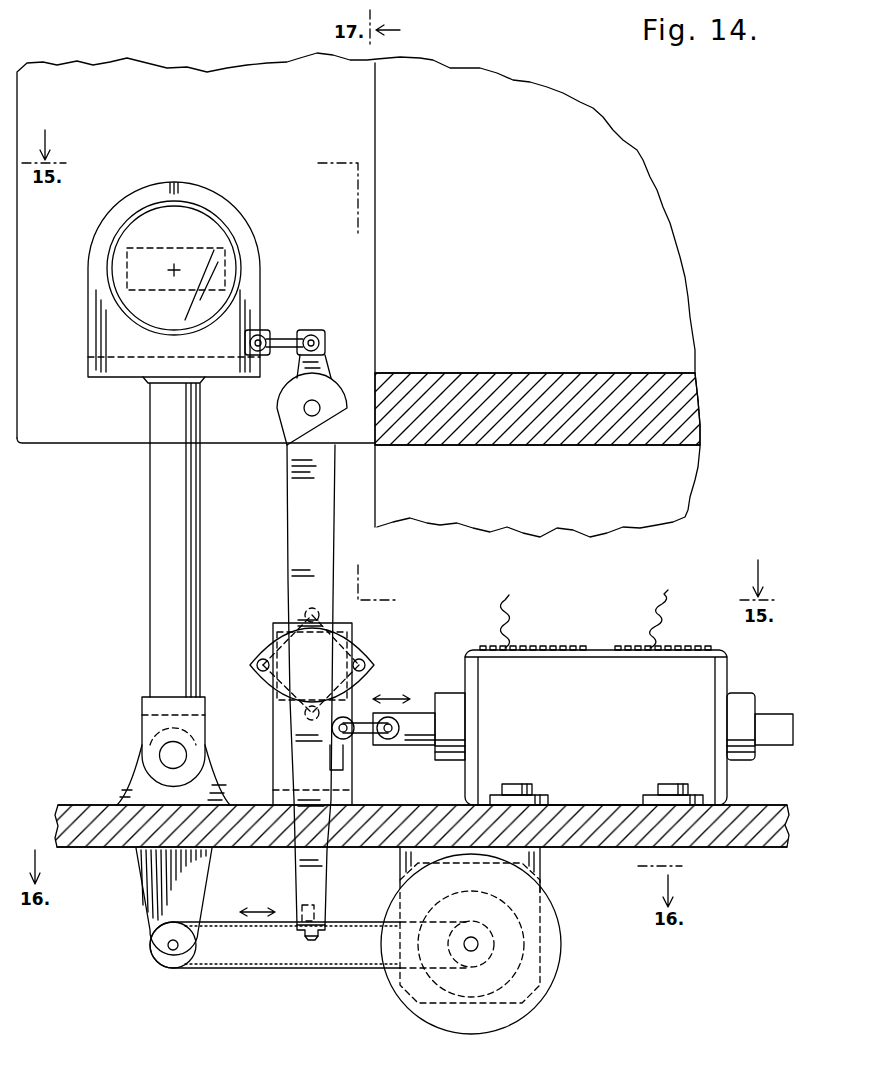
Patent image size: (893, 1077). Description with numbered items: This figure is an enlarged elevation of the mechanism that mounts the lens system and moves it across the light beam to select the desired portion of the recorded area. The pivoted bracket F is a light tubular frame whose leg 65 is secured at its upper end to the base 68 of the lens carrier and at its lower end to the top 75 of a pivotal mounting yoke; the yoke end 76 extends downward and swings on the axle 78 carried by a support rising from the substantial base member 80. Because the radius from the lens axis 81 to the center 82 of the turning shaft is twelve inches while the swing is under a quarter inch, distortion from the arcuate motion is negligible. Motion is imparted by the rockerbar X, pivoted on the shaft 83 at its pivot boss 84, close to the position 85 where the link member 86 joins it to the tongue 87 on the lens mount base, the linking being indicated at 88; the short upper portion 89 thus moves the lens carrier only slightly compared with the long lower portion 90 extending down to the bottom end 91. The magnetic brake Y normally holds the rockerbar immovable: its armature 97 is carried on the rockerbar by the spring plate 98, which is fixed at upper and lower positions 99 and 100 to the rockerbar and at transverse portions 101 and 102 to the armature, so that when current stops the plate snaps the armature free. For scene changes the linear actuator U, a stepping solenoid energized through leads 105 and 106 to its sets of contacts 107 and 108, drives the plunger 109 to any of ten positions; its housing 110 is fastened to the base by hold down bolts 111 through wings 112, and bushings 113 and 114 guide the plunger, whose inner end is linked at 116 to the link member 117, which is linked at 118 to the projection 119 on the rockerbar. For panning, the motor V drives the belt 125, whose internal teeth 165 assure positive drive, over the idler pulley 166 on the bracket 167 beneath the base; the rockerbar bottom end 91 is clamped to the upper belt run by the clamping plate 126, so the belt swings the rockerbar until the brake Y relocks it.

The leg 65 is at (160, 566).
The base of the lens carrier 68 is at (105, 380).
The top of the pivotal mounting yoke 75 is at (142, 708).
The end of the pivotal mounting yoke 76 is at (142, 724).
The axle 78 is at (142, 752).
The base member 80 is at (106, 852).
The lens axis 81 is at (172, 268).
The center of the turning shaft 82 is at (186, 752).
The shaft 83 is at (320, 408).
The lever boss 84 is at (277, 410).
The linking position 85 is at (313, 335).
The link member 86 is at (288, 358).
The tongue 87 is at (245, 345).
The linking 88 is at (262, 336).
The short upper portion of the rockerbar 89 is at (320, 360).
The lower portion of the rockerbar 90 is at (300, 512).
The bottom end of the rockerbar 91 is at (320, 918).
The armature 97 is at (372, 677).
The spring plate 98 is at (372, 651).
The upper securing position 99 is at (303, 612).
The lower securing position 100 is at (302, 712).
The transverse portion 101 is at (262, 660).
The transverse portion 102 is at (366, 666).
The leads 105 is at (510, 598).
The leads 106 is at (664, 592).
The set of contacts 107 is at (530, 653).
The set of contacts 108 is at (664, 653).
The plunger 109 is at (426, 747).
The housing 110 is at (700, 676).
The hold down bolts 111 is at (540, 762).
The wings 112 is at (550, 796).
The bushing 113 is at (455, 776).
The bushing 114 is at (746, 766).
The link connection 116 is at (396, 740).
The link member 117 is at (354, 734).
The link connection 118 is at (386, 741).
The projection 119 is at (338, 740).
The belt 125 is at (276, 970).
The clamping plate 126 is at (326, 930).
The internal teeth 165 is at (236, 930).
The idler pulley 166 is at (163, 960).
The bracket 167 is at (155, 906).
The lamp unit E is at (237, 186).
The pivoted bracket F is at (140, 516).
The rockerbar X is at (280, 554).
The magnetic brake Y is at (386, 638).
The linear actuator U is at (584, 628).
The motor V is at (563, 1004).